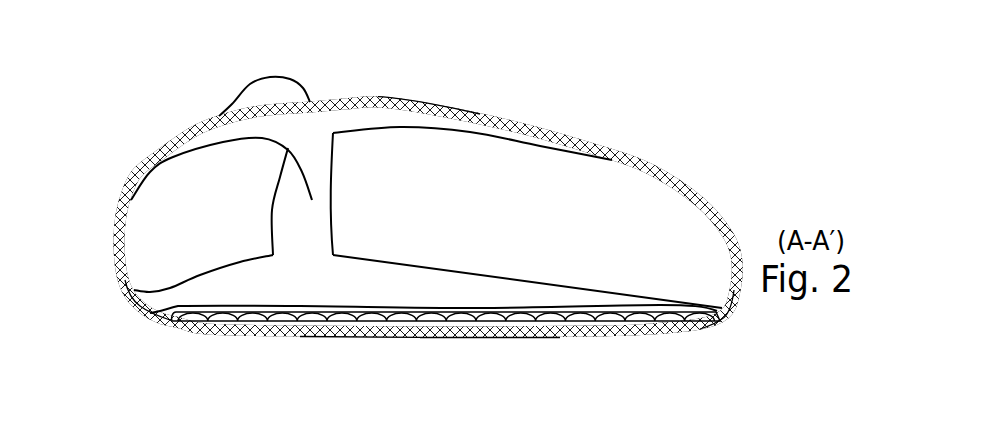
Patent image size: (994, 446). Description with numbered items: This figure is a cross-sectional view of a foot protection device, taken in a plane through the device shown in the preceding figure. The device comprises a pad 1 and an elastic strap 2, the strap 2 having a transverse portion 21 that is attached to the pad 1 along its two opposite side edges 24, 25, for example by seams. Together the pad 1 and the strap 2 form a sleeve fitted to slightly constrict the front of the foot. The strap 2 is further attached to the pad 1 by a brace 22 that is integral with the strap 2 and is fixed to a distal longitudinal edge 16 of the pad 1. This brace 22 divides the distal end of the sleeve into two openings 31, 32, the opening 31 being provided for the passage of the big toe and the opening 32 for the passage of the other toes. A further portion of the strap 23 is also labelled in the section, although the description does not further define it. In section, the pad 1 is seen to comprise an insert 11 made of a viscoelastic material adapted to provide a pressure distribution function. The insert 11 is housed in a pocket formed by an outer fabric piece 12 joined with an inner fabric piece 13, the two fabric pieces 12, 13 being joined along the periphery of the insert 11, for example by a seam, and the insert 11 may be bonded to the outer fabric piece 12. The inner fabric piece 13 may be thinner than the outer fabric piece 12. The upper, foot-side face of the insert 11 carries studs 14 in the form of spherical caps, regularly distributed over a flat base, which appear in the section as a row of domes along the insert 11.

The pad 1 is at (427, 340).
The elastic strap 2 is at (113, 245).
The insert 11 is at (481, 338).
The outer fabric piece 12 is at (568, 338).
The inner fabric piece 13 is at (388, 320).
The studs 14 is at (208, 337).
The distal longitudinal edge 16 is at (375, 262).
The transverse portion 21 is at (425, 120).
The brace 22 is at (295, 223).
The lining 23 is at (365, 130).
The side edge 24 is at (132, 306).
The side edge 25 is at (730, 322).
The opening 31 is at (178, 256).
The opening 32 is at (583, 224).